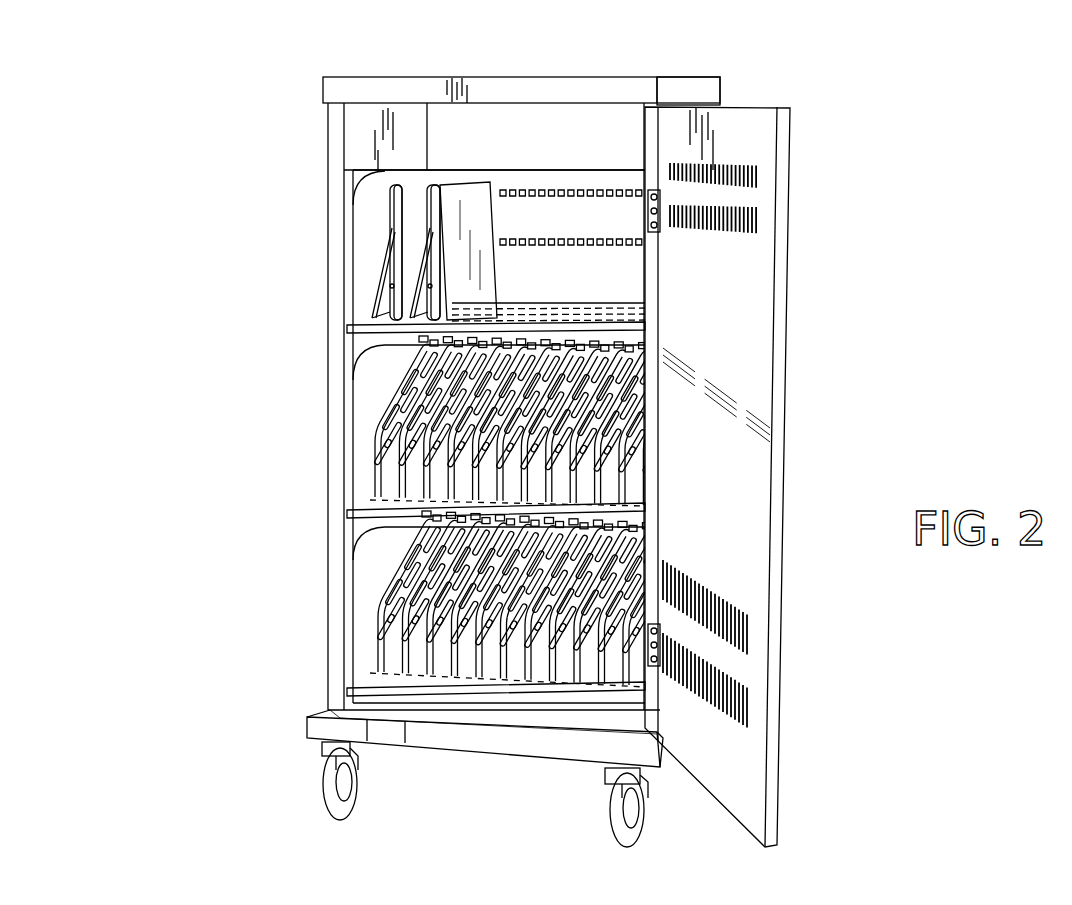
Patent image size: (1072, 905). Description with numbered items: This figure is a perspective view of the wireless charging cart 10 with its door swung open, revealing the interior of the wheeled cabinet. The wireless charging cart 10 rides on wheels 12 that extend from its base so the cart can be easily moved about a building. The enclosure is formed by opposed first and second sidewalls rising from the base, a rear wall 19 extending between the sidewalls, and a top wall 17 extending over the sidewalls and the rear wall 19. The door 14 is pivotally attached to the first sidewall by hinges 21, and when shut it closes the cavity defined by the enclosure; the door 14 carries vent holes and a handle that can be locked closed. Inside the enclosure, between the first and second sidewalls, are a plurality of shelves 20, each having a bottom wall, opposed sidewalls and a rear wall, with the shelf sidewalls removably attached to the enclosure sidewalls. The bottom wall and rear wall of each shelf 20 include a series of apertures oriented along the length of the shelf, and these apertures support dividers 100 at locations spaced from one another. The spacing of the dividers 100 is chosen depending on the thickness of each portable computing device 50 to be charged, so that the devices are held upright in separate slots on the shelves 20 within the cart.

The wireless charging cart 10 is at (297, 193).
The wheels 12 is at (318, 797).
The door 14 is at (790, 357).
The top wall 17 is at (693, 85).
The rear wall 19 is at (615, 123).
The shelves 20 is at (393, 322).
The hinges 21 is at (657, 215).
The portable computing device 50 is at (450, 243).
The dividers 100 is at (373, 443).